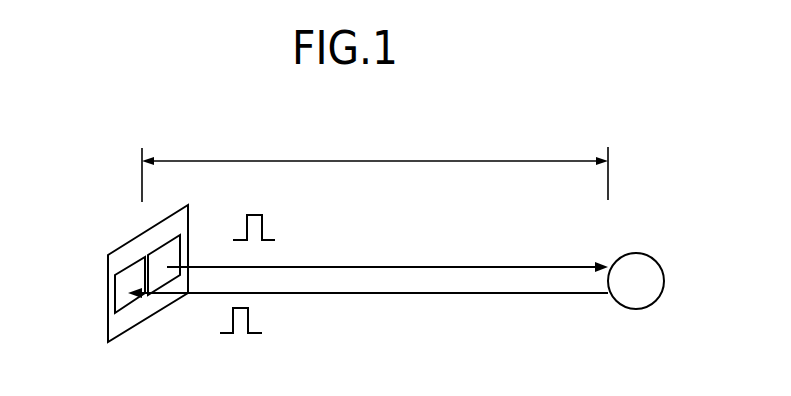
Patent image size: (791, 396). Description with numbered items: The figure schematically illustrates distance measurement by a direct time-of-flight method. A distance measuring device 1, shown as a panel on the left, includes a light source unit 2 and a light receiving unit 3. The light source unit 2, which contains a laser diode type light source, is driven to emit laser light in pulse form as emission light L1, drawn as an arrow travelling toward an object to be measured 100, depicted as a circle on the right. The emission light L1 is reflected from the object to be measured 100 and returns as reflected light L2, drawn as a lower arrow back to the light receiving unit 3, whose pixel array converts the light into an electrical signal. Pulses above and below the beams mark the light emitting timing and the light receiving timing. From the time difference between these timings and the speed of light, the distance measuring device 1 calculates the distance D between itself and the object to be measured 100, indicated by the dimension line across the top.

The distance measuring device 1 is at (118, 195).
The light source unit 2 is at (161, 247).
The light receiving unit 3 is at (127, 269).
The object to be measured 100 is at (651, 256).
The emission light L1 is at (468, 266).
The reflected light L2 is at (470, 294).
The distance D is at (375, 167).